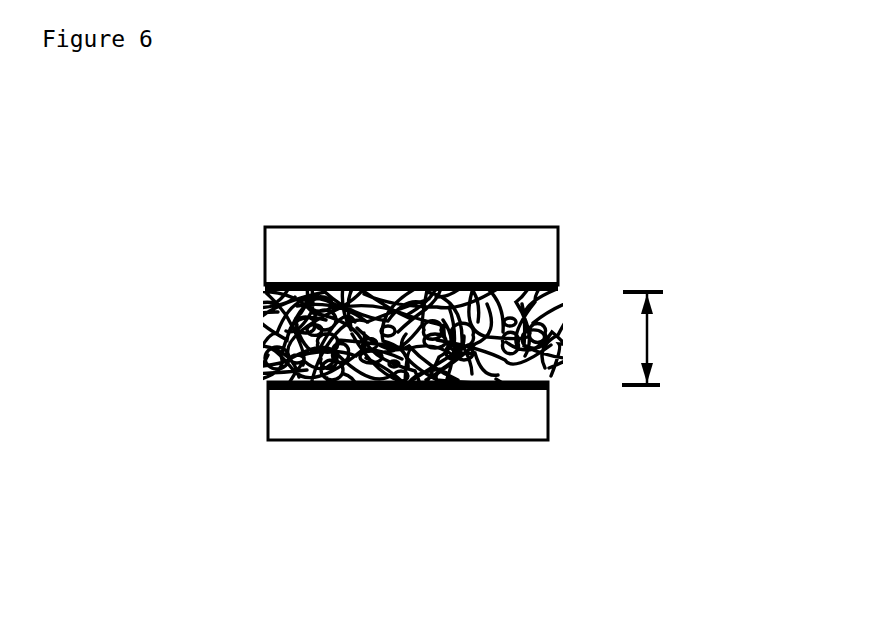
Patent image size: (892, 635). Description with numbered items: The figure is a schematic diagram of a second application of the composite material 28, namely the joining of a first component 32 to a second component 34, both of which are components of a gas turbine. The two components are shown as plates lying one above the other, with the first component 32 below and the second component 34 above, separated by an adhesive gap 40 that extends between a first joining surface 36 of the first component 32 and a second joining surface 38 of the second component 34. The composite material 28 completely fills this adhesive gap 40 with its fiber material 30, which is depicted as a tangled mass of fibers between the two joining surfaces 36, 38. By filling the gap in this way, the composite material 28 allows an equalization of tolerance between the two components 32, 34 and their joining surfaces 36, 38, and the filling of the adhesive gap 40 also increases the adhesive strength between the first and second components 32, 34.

The composite material 28 is at (403, 439).
The fiber material 30 is at (360, 345).
The first component 32 is at (403, 418).
The second component 34 is at (402, 250).
The first joining surface 36 is at (432, 383).
The second joining surface 38 is at (480, 288).
The adhesive gap 40 is at (658, 338).